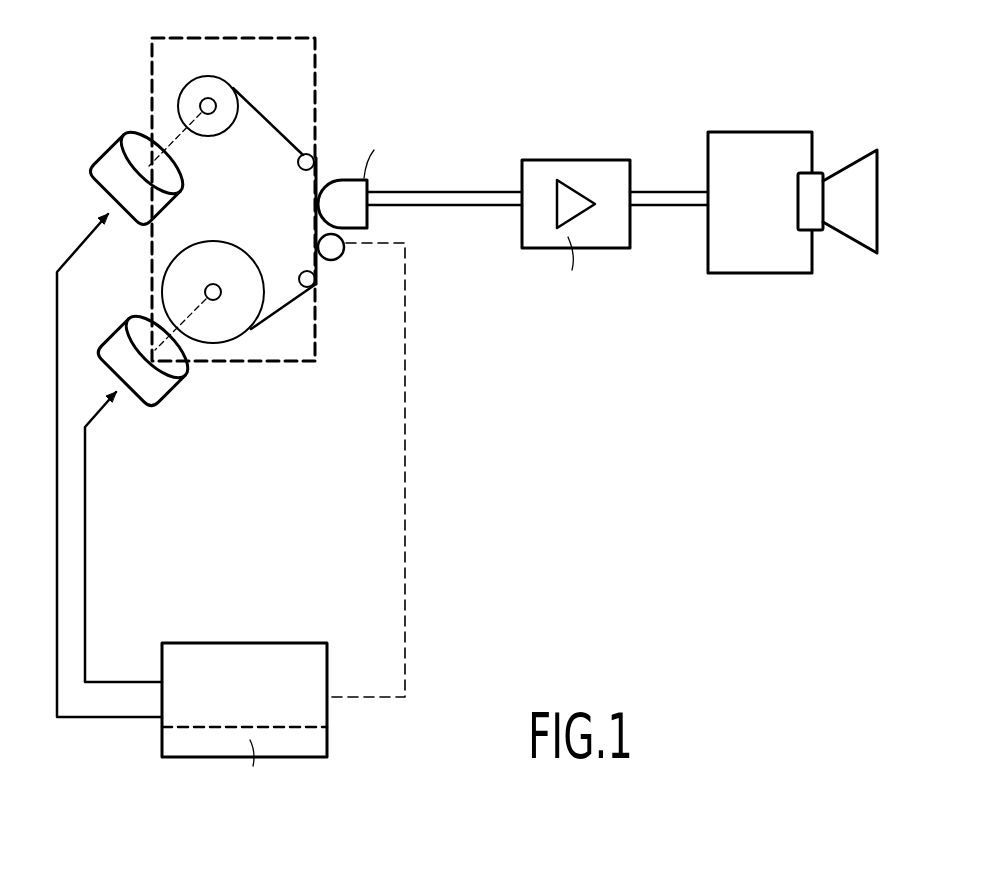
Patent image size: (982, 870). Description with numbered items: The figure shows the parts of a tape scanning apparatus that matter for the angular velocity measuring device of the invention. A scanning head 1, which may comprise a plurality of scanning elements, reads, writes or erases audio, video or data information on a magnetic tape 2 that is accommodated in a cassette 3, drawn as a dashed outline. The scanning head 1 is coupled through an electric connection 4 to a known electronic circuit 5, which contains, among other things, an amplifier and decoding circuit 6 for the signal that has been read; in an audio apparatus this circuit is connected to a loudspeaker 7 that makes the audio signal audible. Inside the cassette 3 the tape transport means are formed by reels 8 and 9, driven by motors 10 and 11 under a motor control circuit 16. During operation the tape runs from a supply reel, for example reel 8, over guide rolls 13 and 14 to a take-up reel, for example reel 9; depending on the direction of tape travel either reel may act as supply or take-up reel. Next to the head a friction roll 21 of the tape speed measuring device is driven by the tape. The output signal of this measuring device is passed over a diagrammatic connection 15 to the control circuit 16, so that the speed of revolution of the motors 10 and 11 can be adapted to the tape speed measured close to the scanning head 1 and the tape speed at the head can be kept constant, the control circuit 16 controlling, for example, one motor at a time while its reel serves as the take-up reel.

The scanning head 1 is at (340, 178).
The magnetic tape 2 is at (287, 128).
The cassette 3 is at (263, 36).
The electric connection 4 is at (465, 191).
The electronic circuit 5 is at (540, 160).
The amplifier and decoding circuit 6 is at (582, 190).
The loudspeaker 7 is at (858, 154).
The reel 8 is at (178, 98).
The reel 9 is at (232, 323).
The motor 10 is at (114, 166).
The motor 11 is at (155, 395).
The guide roll 13 is at (297, 161).
The guide roll 14 is at (299, 271).
The control connection line 15 is at (407, 495).
The motor control circuit 16 is at (228, 660).
The friction roll 21 is at (337, 258).